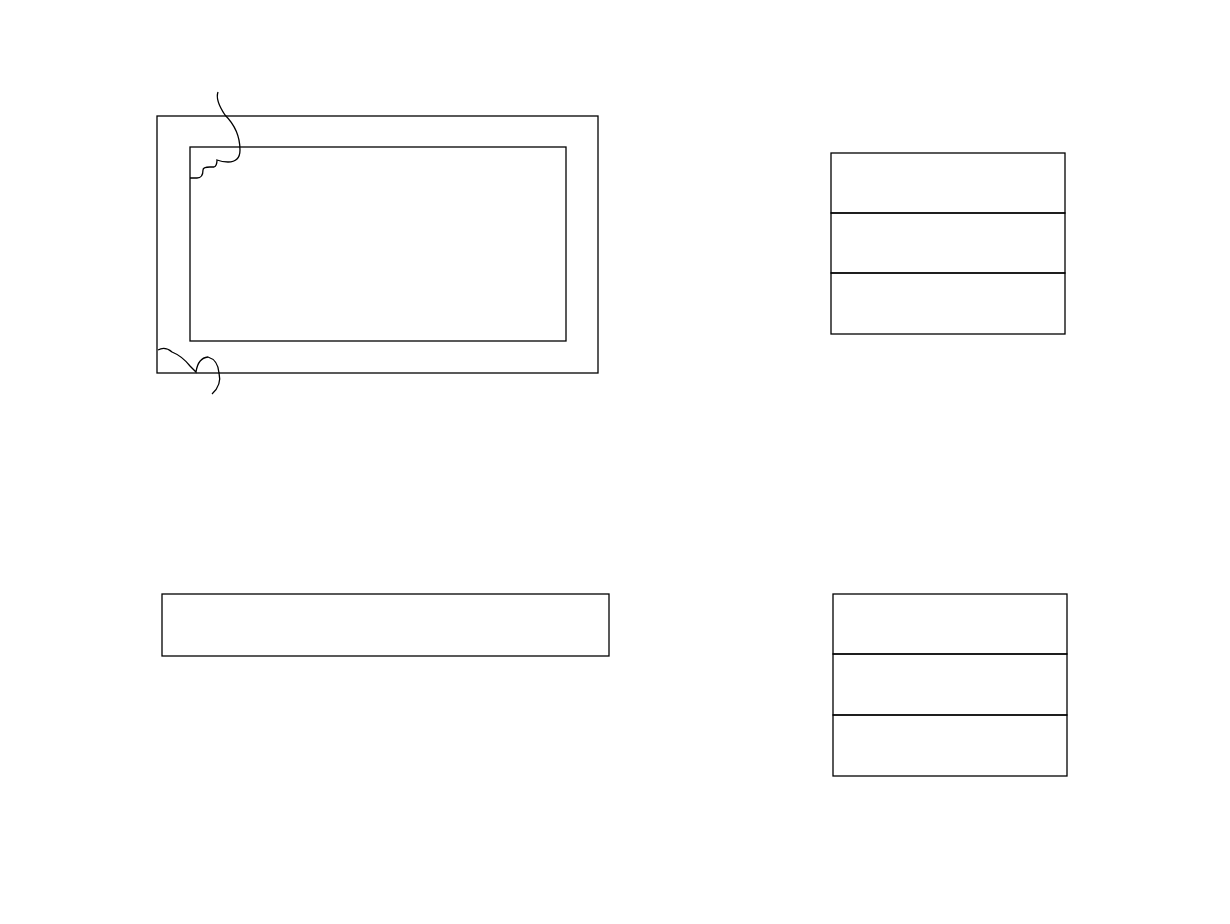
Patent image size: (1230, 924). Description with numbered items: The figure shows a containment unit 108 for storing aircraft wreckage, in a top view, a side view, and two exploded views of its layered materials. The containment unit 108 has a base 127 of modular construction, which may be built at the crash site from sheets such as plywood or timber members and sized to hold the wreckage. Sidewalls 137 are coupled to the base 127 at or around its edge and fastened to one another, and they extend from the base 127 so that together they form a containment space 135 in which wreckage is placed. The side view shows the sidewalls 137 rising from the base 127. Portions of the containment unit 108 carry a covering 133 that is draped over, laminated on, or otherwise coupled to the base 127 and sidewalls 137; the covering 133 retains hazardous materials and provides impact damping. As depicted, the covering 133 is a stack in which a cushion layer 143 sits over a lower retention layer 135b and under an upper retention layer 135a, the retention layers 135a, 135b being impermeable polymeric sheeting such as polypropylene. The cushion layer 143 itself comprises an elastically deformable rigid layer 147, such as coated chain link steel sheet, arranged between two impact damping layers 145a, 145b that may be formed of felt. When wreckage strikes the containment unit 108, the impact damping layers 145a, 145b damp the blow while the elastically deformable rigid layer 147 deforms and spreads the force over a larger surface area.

In FIG. 2A, the containment unit 108 is at (391, 264).
In FIG. 2B, the containment unit 108 is at (341, 641).
In FIG. 2A, the base 127 is at (540, 272).
In FIG. 2B, the base 127 is at (508, 655).
In FIG. 2A, the covering 133 is at (199, 242).
In FIG. 2C, the covering 133 is at (1011, 239).
In FIG. 2A, the containment space 135 is at (535, 203).
In FIG. 2C, the retention layer 135a is at (1067, 178).
In FIG. 2C, the retention layer 135b is at (1067, 292).
In FIG. 2A, the sidewall 137 is at (330, 132).
In FIG. 2B, the sidewall 137 is at (517, 610).
In FIG. 2C, the cushion layer 143 is at (1067, 238).
In FIG. 2D, the cushion layer 143 is at (960, 684).
In FIG. 2D, the impact damping layer 145a is at (1068, 607).
In FIG. 2D, the impact damping layer 145b is at (1068, 733).
In FIG. 2D, the elastically deformable rigid layer 147 is at (1068, 672).